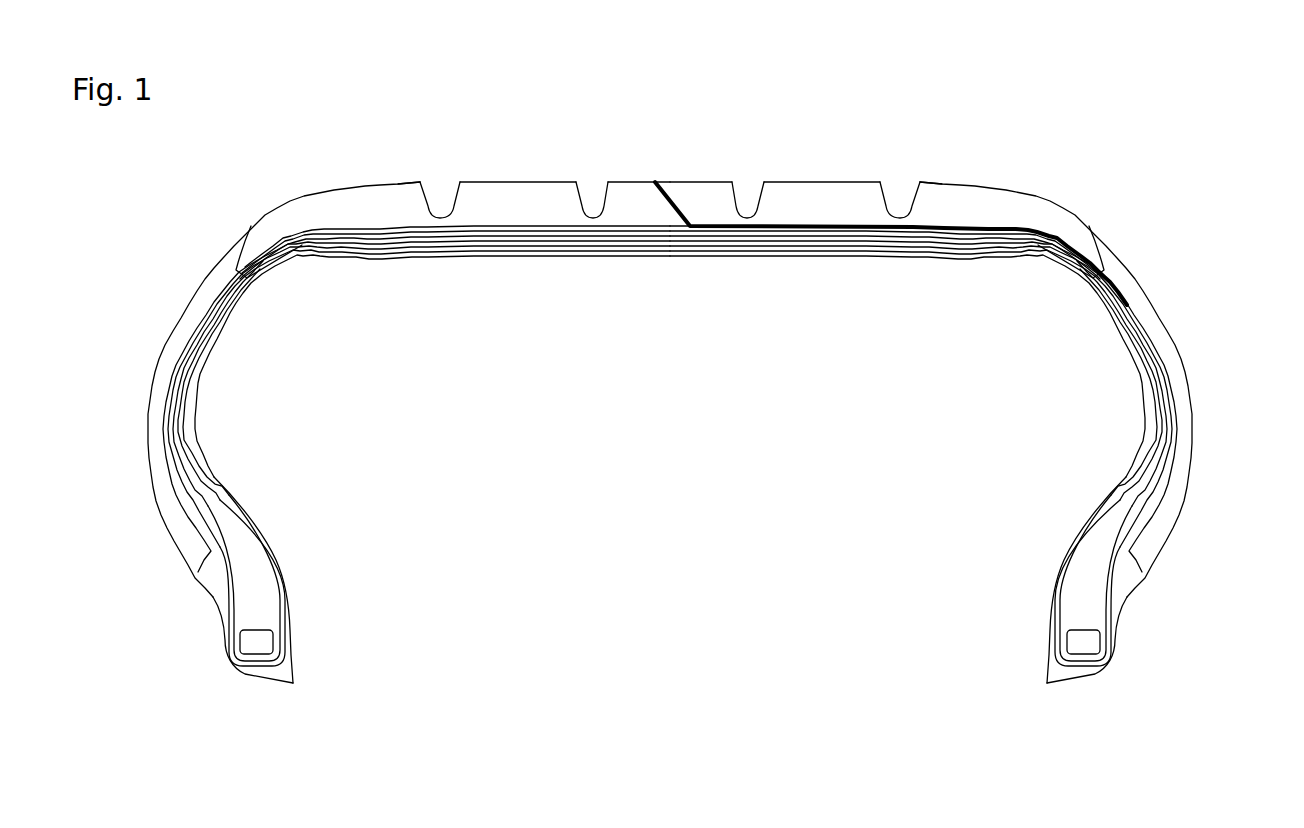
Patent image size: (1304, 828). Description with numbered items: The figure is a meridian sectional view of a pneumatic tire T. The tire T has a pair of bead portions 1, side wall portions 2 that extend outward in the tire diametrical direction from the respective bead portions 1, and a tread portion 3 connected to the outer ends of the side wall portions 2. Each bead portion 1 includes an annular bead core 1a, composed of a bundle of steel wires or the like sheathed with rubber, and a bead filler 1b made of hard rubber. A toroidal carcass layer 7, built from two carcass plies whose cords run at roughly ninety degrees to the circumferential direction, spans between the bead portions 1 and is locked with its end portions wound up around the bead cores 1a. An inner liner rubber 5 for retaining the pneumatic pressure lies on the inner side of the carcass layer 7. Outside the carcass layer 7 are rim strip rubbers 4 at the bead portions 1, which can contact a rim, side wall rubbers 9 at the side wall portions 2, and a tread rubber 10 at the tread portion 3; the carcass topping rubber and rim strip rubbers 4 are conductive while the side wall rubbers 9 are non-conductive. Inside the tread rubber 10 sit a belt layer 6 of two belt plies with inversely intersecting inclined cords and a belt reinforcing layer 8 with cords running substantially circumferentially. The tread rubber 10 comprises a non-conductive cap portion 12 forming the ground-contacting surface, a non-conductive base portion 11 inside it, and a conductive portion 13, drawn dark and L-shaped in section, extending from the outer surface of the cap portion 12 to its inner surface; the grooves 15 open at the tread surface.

The pneumatic tire T is at (1133, 112).
The bead portion 1 is at (207, 666).
The bead core 1a is at (262, 643).
The bead filler 1b is at (252, 610).
The side wall portion 2 is at (132, 395).
The tread portion 3 is at (462, 168).
The rim strip rubber 4 is at (197, 582).
The inner liner rubber 5 is at (470, 257).
The belt layer 6 is at (590, 243).
The carcass layer 7 is at (182, 324).
The belt reinforcing layer 8 is at (807, 238).
The side wall rubber 9 is at (150, 474).
The tread rubber 10 is at (958, 184).
The base portion 11 is at (642, 222).
The cap portion 12 is at (786, 190).
The conductive portion 13 is at (998, 228).
The shoulder groove 15 is at (430, 180).